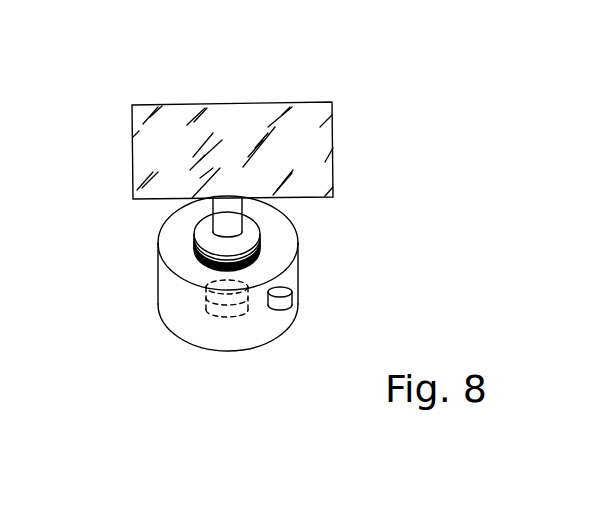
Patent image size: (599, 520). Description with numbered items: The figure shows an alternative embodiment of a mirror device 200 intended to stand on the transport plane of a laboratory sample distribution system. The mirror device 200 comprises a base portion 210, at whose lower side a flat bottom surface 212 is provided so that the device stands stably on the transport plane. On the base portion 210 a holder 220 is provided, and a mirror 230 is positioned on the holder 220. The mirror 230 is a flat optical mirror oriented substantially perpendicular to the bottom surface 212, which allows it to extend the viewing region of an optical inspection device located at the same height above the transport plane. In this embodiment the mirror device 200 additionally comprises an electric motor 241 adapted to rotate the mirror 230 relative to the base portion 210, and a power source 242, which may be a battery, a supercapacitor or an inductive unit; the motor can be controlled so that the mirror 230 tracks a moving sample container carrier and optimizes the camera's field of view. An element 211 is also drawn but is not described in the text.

The mirror device 200 is at (125, 393).
The base portion 210 is at (173, 304).
The pin 211 is at (247, 310).
The bottom surface 212 is at (222, 352).
The holder 220 is at (228, 207).
The mirror 230 is at (290, 133).
The electric motor 241 is at (258, 240).
The power source 242 is at (281, 304).